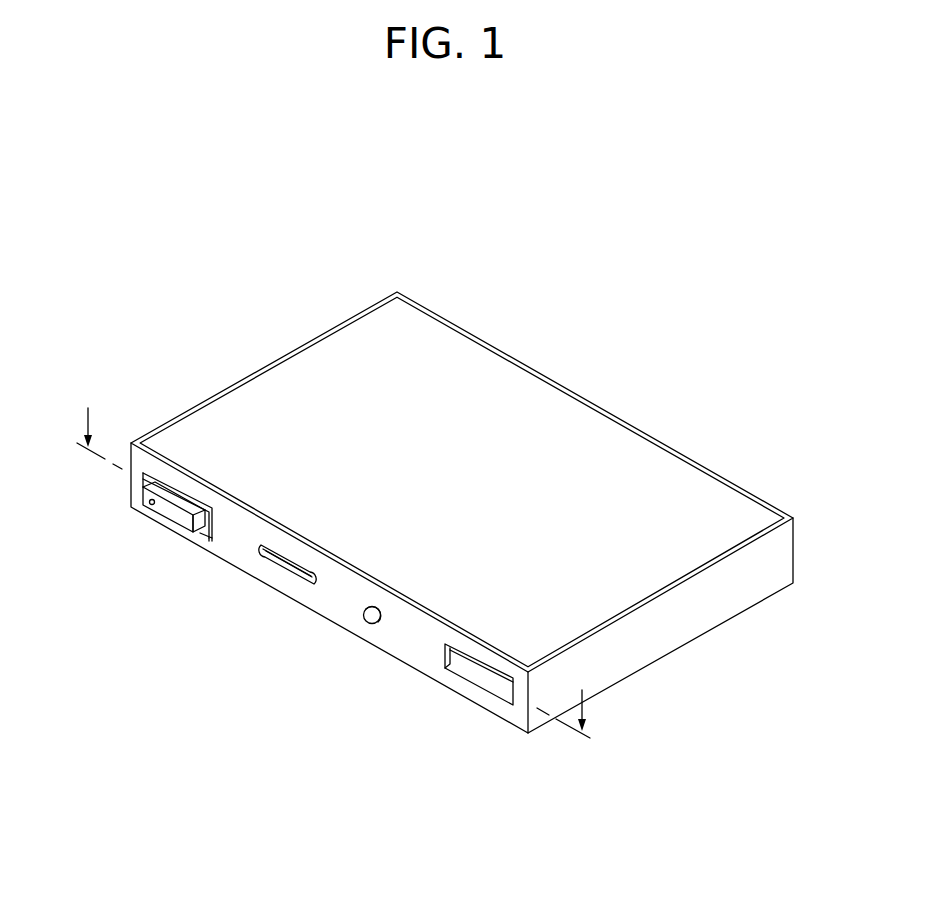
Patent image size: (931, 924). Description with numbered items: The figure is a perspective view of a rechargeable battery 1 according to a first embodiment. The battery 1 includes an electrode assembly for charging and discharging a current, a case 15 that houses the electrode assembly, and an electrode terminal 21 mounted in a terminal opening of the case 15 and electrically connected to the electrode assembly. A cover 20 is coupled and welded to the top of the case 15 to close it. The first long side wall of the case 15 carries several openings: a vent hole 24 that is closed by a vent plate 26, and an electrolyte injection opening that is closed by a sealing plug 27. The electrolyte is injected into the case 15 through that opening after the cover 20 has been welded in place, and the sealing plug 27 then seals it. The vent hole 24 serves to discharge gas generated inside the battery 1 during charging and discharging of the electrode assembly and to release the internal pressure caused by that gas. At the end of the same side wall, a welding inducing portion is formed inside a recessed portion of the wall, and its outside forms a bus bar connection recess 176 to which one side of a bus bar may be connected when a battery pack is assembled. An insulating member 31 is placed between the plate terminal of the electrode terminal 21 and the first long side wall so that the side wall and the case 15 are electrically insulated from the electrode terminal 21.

The rechargeable battery 1 is at (435, 499).
The case 15 is at (462, 512).
The cover 20 is at (582, 434).
The electrode terminal 21 is at (148, 522).
The insulating member 31 is at (213, 536).
The vent hole 24 is at (270, 563).
The vent plate 26 is at (303, 570).
The sealing plug 27 is at (371, 622).
The bus bar connection recess 176 is at (480, 683).